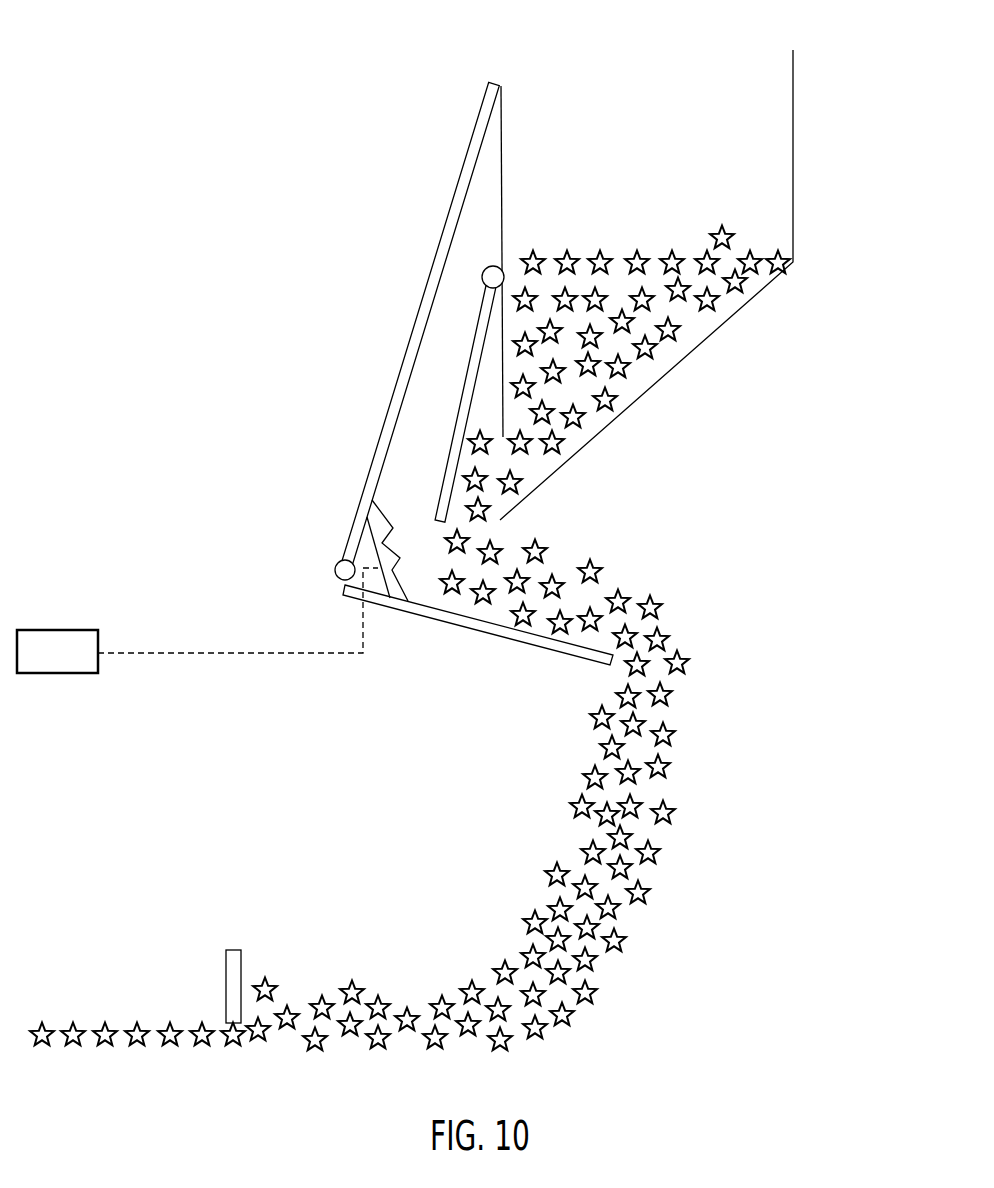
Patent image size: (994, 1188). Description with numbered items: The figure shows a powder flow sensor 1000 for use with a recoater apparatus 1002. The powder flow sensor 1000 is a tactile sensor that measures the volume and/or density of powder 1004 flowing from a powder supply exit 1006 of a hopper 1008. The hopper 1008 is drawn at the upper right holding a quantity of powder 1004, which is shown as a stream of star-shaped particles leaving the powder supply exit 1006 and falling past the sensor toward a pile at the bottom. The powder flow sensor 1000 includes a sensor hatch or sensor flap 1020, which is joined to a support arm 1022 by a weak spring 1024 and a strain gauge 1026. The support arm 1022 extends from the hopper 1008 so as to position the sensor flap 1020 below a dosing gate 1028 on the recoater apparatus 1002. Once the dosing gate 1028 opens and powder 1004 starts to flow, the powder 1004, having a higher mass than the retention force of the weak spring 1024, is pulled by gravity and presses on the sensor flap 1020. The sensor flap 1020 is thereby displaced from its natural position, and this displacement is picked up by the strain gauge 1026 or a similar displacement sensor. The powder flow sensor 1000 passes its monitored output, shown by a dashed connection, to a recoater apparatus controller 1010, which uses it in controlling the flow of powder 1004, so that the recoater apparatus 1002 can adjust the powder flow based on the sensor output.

The powder flow sensor 1000 is at (205, 548).
The recoater apparatus 1002 is at (278, 113).
The powder 1004 is at (673, 807).
The powder supply exit 1006 is at (512, 529).
The hopper 1008 is at (797, 130).
The recoater apparatus controller 1010 is at (80, 664).
The sensor flap 1020 is at (507, 632).
The support arm 1022 is at (447, 237).
The weak spring 1024 is at (384, 545).
The strain gauge 1026 is at (372, 543).
The dosing gate 1028 is at (475, 348).